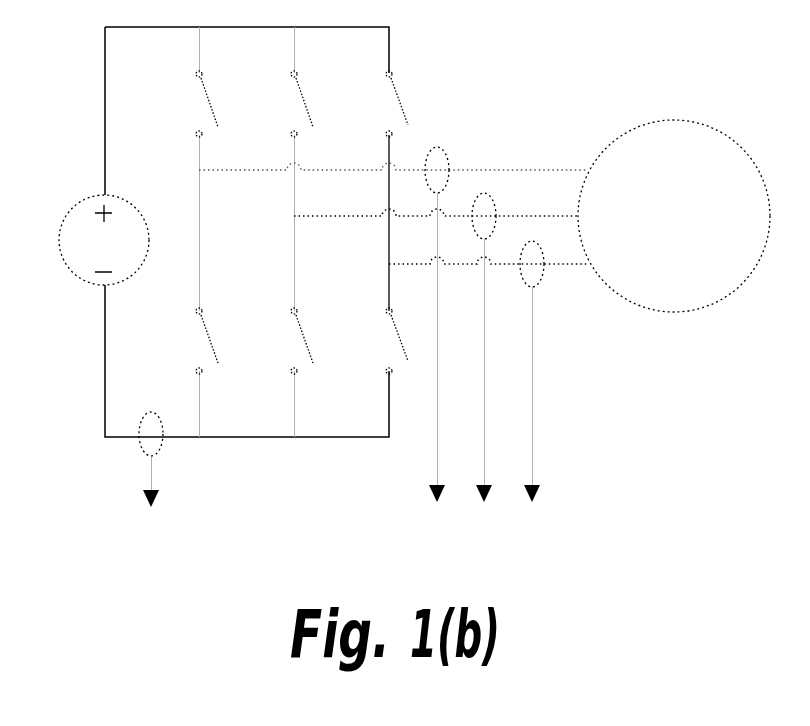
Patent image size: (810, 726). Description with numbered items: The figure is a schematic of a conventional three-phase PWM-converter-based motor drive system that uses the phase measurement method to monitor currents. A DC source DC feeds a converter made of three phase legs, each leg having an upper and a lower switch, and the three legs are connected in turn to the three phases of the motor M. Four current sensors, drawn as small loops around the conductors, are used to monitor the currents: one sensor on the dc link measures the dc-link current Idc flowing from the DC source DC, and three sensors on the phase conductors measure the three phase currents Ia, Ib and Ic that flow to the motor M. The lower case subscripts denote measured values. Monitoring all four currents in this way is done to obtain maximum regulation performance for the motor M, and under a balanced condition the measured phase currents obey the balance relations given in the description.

The DC source DC is at (86, 240).
The motor M is at (674, 216).
The dc-link current Idc is at (162, 480).
The phase a current Ia is at (438, 350).
The phase b current Ib is at (492, 373).
The phase c current Ic is at (536, 397).